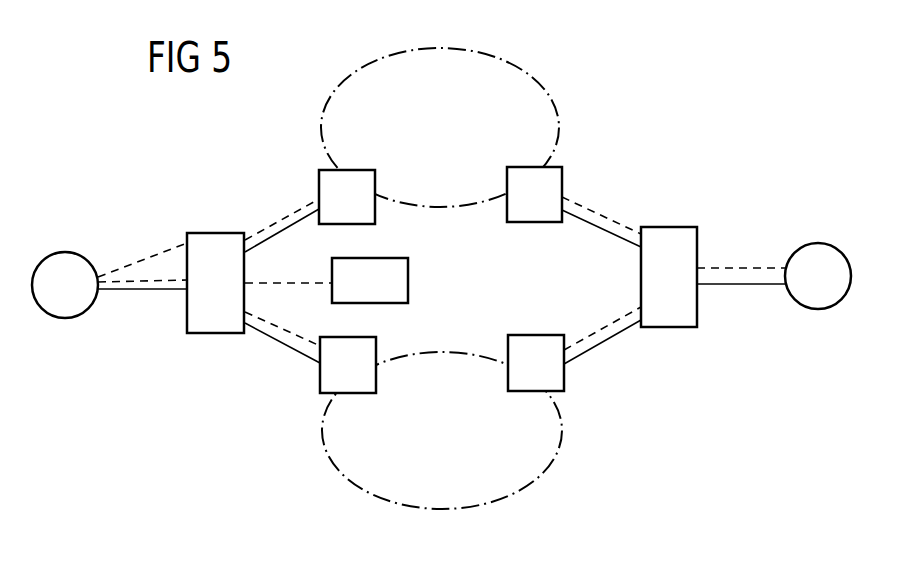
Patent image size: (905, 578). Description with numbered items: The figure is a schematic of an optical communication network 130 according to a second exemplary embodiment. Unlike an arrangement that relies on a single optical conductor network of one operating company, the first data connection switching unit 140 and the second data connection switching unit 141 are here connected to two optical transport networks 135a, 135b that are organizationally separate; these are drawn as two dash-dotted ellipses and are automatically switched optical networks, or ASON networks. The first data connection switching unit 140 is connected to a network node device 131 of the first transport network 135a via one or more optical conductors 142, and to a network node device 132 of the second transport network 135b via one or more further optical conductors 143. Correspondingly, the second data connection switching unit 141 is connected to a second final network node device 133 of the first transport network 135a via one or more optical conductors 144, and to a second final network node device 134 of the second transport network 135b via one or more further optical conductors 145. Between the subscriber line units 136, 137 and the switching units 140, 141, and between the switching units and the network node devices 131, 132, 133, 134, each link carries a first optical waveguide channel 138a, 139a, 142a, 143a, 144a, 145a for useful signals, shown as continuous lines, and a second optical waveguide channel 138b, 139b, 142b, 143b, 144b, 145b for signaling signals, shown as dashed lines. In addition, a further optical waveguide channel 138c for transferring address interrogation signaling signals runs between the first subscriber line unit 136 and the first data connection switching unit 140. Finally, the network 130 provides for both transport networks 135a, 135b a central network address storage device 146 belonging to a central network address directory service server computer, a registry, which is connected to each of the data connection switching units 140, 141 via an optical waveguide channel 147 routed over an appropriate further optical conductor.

The optical communication network 130 is at (442, 280).
The network node device 131 is at (349, 166).
The network node device 132 is at (351, 396).
The final network node device 133 is at (528, 165).
The final network node device 134 is at (532, 394).
The first optical transport network 135a is at (466, 111).
The second optical transport network 135b is at (471, 451).
The first subscriber line unit 136 is at (65, 317).
The second subscriber line unit 137 is at (818, 309).
The first optical waveguide channel 138a is at (132, 321).
The second optical waveguide channel 138b is at (142, 313).
The further optical waveguide channel 138c is at (137, 242).
The first optical waveguide channel 139a is at (744, 315).
The second optical waveguide channel 139b is at (741, 240).
The first data connection switching unit 140 is at (212, 313).
The second data connection switching unit 141 is at (673, 308).
The optical conductors 142 is at (267, 189).
The first optical waveguide channel 142a is at (267, 215).
The second optical waveguide channel 142b is at (282, 192).
The further optical conductors 143 is at (271, 360).
The first optical waveguide channel 143a is at (271, 359).
The second optical waveguide channel 143b is at (281, 313).
The optical conductors 144 is at (622, 211).
The first optical waveguide channel 144a is at (596, 242).
The second optical waveguide channel 144b is at (601, 191).
The further optical conductors 145 is at (605, 352).
The first optical waveguide channel 145a is at (608, 357).
The second optical waveguide channel 145b is at (599, 315).
The central network address storage device 146 is at (404, 277).
The optical waveguide channel 147 is at (288, 255).